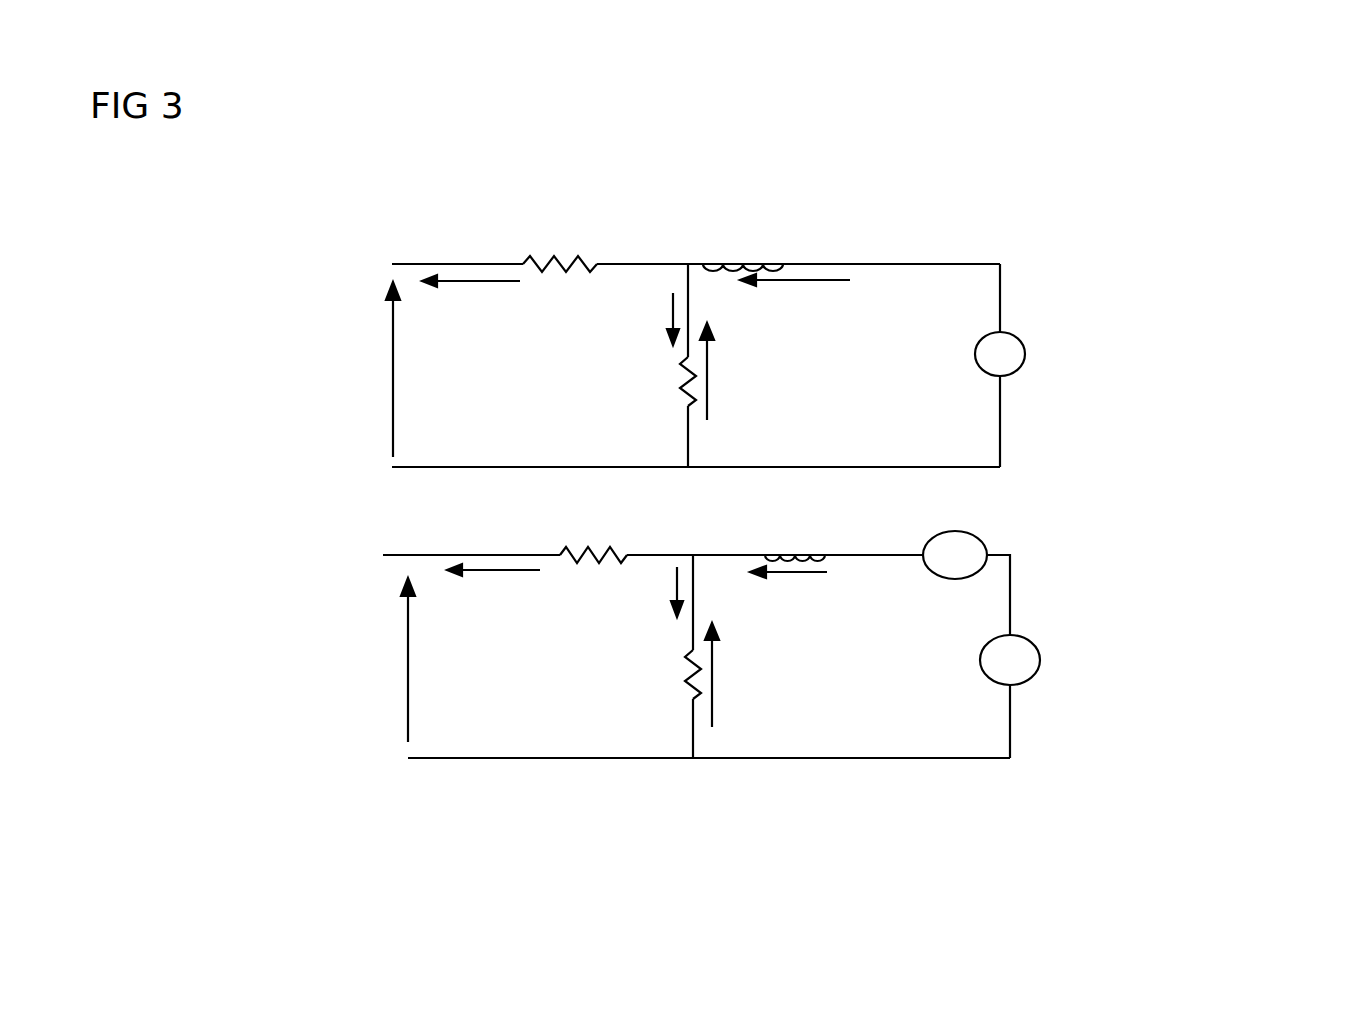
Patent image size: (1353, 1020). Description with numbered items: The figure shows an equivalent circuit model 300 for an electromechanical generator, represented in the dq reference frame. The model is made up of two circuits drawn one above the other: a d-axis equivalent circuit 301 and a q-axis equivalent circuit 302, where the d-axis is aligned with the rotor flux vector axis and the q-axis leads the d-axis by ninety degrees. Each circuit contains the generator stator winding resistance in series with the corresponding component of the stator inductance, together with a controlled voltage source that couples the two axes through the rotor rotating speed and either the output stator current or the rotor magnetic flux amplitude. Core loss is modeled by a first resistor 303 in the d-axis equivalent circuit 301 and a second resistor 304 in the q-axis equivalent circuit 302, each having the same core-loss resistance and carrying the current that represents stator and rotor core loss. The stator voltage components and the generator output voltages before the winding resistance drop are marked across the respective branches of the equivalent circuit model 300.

The equivalent circuit model 300 is at (1247, 173).
The d-axis equivalent circuit 301 is at (293, 260).
The q-axis equivalent circuit 302 is at (293, 603).
The first resistor 303 is at (682, 357).
The second resistor 304 is at (700, 655).